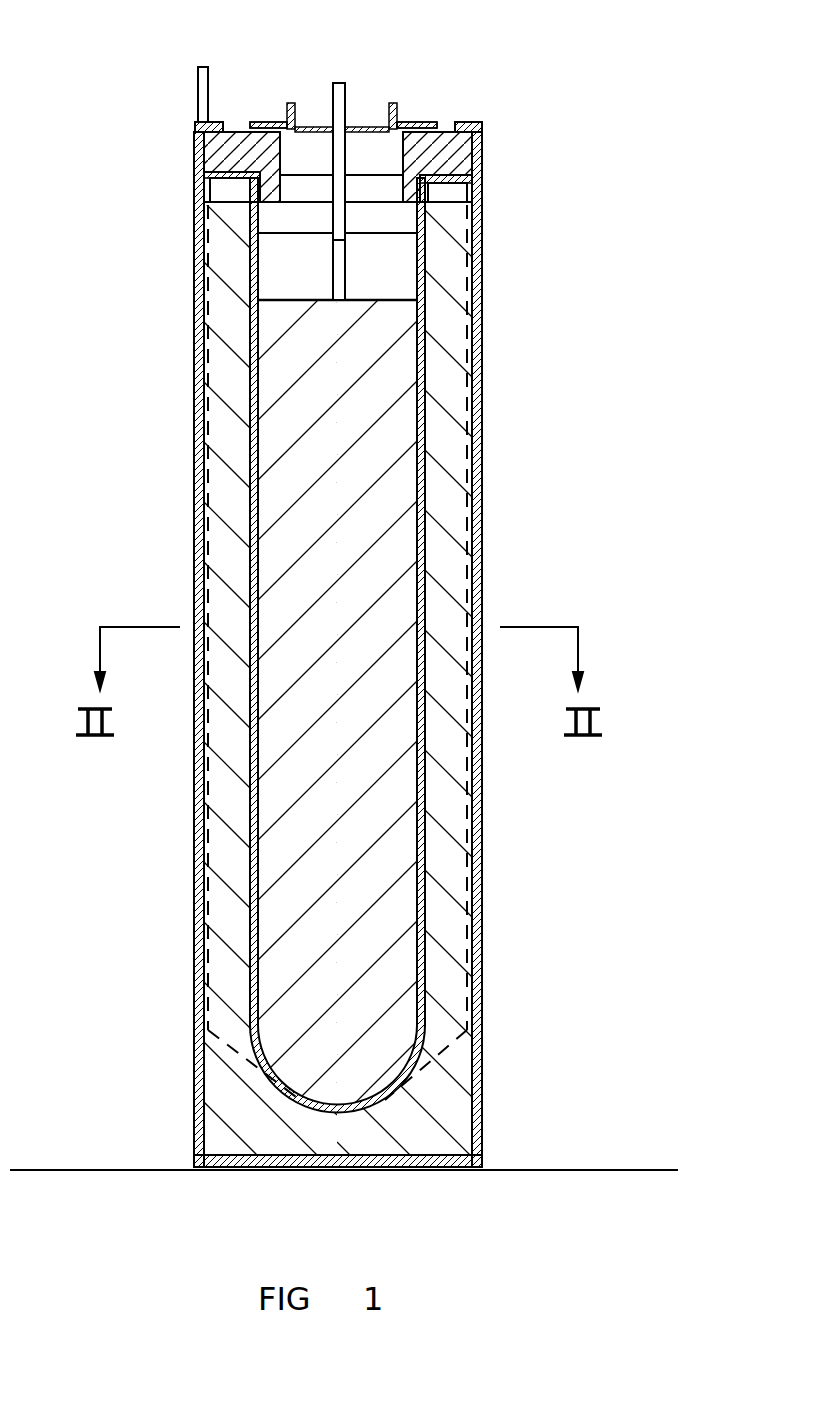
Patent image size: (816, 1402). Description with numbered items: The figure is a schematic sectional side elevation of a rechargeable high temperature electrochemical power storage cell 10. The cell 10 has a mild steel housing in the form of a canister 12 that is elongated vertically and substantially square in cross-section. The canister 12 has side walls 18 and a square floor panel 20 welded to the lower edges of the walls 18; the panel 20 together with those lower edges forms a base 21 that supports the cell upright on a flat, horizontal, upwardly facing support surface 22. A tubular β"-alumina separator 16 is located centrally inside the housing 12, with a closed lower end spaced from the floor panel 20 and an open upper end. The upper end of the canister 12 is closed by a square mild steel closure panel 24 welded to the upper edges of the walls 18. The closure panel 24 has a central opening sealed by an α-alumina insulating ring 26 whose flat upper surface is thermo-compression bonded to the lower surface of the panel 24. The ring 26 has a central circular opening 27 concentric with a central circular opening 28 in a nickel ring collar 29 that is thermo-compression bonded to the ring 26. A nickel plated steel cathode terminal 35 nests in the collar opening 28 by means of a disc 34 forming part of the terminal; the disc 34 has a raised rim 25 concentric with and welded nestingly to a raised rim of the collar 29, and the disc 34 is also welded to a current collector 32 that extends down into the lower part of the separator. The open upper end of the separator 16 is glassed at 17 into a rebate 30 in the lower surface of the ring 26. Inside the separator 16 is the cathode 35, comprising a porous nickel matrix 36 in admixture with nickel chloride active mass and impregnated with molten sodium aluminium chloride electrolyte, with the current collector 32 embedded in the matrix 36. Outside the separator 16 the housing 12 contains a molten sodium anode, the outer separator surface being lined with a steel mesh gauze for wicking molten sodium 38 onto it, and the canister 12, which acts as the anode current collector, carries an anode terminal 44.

The rechargeable high temperature electrochemical power storage cell 10 is at (613, 123).
The canister 12 is at (497, 876).
The separator 16 is at (420, 775).
The glassing 17 is at (223, 143).
The side walls 18 is at (480, 985).
The floor panel 20 is at (347, 1160).
The base 21 is at (277, 1178).
The support surface 22 is at (588, 1172).
The closure panel 24 is at (470, 122).
The raised rim 25 is at (392, 105).
The insulating ring 26 is at (453, 153).
The central circular opening 27 is at (372, 158).
The central circular opening 28 is at (314, 110).
The ring collar 29 is at (262, 122).
The rebate 30 is at (231, 152).
The current collector 32 is at (333, 280).
The disc 34 is at (368, 122).
The cathode terminal 35 is at (356, 76).
The porous nickel matrix 36 is at (393, 382).
The molten sodium 38 is at (223, 368).
The anode terminal 44 is at (204, 88).